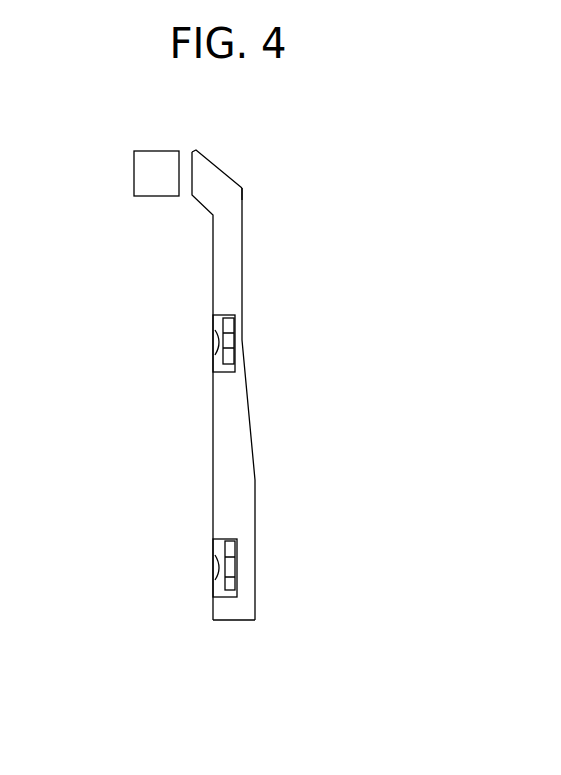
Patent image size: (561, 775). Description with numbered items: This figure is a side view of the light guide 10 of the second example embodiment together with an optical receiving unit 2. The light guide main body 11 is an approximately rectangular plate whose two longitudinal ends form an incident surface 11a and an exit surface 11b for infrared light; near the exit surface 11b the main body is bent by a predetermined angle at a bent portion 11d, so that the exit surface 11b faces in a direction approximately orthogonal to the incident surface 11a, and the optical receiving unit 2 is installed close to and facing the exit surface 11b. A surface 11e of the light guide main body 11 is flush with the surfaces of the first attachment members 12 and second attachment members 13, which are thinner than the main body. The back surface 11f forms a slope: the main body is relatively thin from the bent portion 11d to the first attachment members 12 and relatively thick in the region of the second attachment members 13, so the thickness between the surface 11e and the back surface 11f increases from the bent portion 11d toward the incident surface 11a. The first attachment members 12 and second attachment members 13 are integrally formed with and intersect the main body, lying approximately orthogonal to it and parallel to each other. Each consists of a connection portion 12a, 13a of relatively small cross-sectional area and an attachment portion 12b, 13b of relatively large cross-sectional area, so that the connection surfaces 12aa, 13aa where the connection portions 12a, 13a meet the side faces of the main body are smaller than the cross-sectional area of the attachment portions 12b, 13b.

The optical receiving unit 2 is at (153, 165).
The light guide 10 is at (156, 302).
The light guide main body 11 is at (249, 393).
The incident surface 11a is at (238, 622).
The exit surface 11b is at (191, 155).
The bent portion 11d is at (242, 190).
The surface 11e is at (213, 255).
The back surface 11f is at (242, 267).
The first attachment member 12 is at (247, 345).
The connection portion 12a is at (235, 370).
The connection surface 12aa is at (216, 326).
The attachment portion 12b is at (242, 345).
The second attachment member 13 is at (253, 571).
The connection portion 13a is at (237, 590).
The connection surface 13aa is at (215, 543).
The attachment portion 13b is at (237, 555).